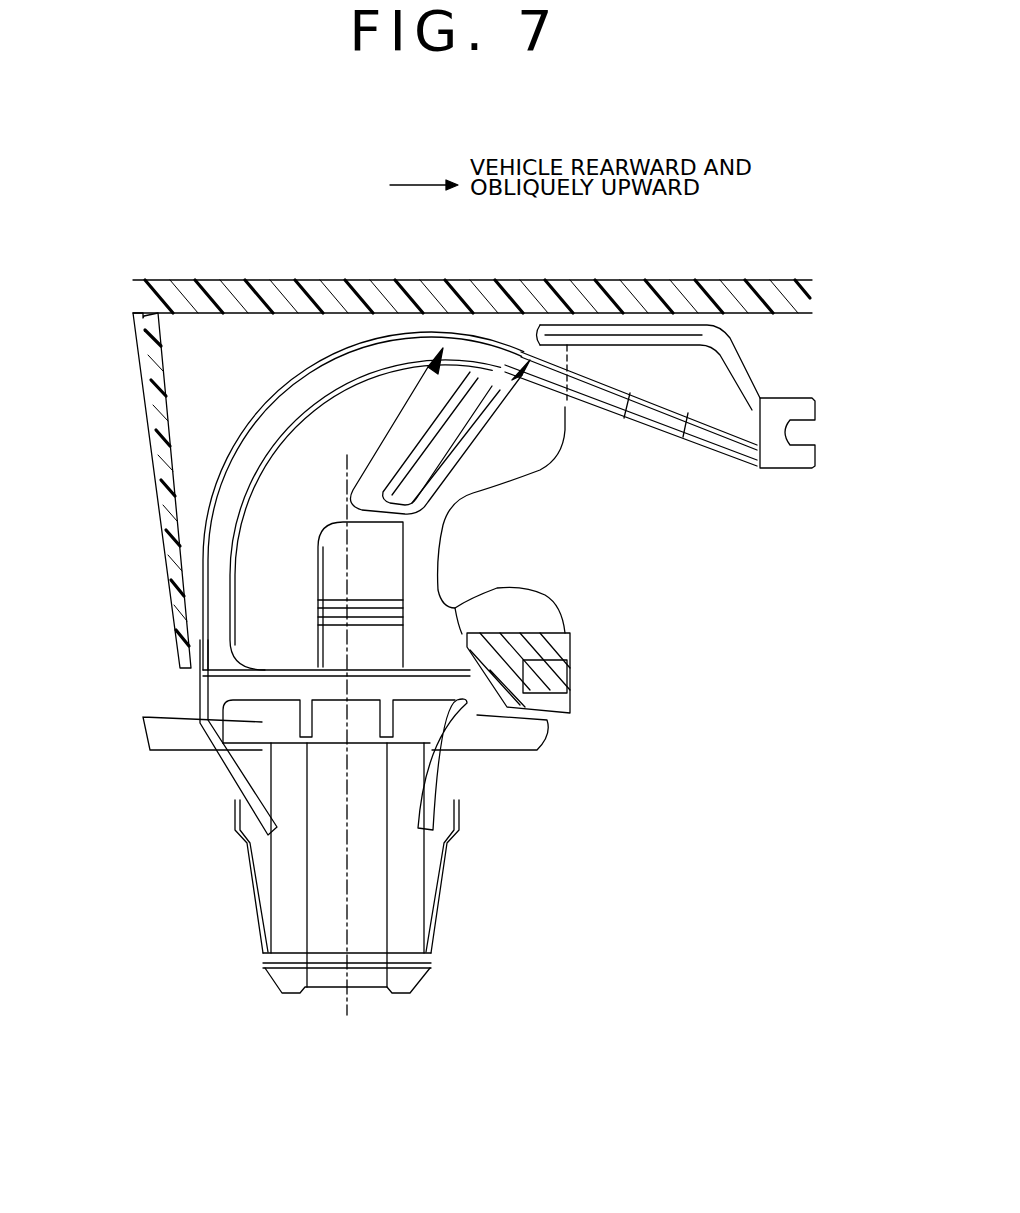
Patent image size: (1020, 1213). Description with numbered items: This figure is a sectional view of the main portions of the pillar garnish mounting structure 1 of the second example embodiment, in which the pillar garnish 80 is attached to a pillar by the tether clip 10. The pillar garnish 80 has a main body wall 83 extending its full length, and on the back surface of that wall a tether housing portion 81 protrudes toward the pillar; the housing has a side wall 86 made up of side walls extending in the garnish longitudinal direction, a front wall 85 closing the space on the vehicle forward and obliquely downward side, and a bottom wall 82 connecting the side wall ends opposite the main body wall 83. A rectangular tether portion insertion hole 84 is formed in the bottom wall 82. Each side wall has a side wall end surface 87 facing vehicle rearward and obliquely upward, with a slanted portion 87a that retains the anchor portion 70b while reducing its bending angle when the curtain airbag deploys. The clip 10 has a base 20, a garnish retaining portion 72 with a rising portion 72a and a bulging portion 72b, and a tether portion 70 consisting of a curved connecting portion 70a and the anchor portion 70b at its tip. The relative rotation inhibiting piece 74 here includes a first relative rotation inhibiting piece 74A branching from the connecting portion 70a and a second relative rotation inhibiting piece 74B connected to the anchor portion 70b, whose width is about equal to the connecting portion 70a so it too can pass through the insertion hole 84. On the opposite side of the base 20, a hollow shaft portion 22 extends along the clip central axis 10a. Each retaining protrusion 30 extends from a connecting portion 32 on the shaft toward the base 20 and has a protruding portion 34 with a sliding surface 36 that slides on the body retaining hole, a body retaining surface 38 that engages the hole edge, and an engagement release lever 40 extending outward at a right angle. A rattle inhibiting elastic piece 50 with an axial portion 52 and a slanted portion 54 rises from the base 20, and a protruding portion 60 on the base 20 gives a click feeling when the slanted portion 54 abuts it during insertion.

The pillar garnish mounting structure 1 is at (555, 515).
The tether clip 10 is at (445, 942).
The clip central axis 10a is at (352, 992).
The base 20 is at (432, 683).
The shaft portion 22 is at (370, 903).
The retaining protrusion 30 is at (135, 785).
The connecting portion 32 is at (255, 925).
The protruding portion 34 is at (239, 823).
The sliding surface 36 is at (253, 890).
The body retaining surface 38 is at (237, 805).
The engagement release lever 40 is at (185, 753).
The rattle inhibiting elastic piece 50 is at (128, 645).
The axial portion 52 is at (207, 710).
The slanted portion 54 is at (240, 777).
The protruding portion 60 is at (385, 730).
The tether portion 70 is at (665, 240).
The connecting portion 70a is at (620, 377).
The anchor portion 70b is at (778, 410).
The garnish retaining portion 72 is at (118, 560).
The rising portion 72a is at (333, 653).
The bulging portion 72b is at (333, 567).
The relative rotation inhibiting piece 74 is at (470, 240).
The first relative rotation inhibiting piece 74A is at (385, 440).
The second relative rotation inhibiting piece 74B is at (485, 338).
The pillar garnish 80 is at (161, 280).
The tether housing portion 81 is at (146, 365).
The bottom wall 82 is at (560, 645).
The main body wall 83 is at (282, 300).
The tether portion insertion hole 84 is at (490, 585).
The front wall 85 is at (152, 430).
The side wall 86 is at (230, 375).
The side wall end surface 87 is at (545, 468).
The slanted portion 87a is at (500, 583).